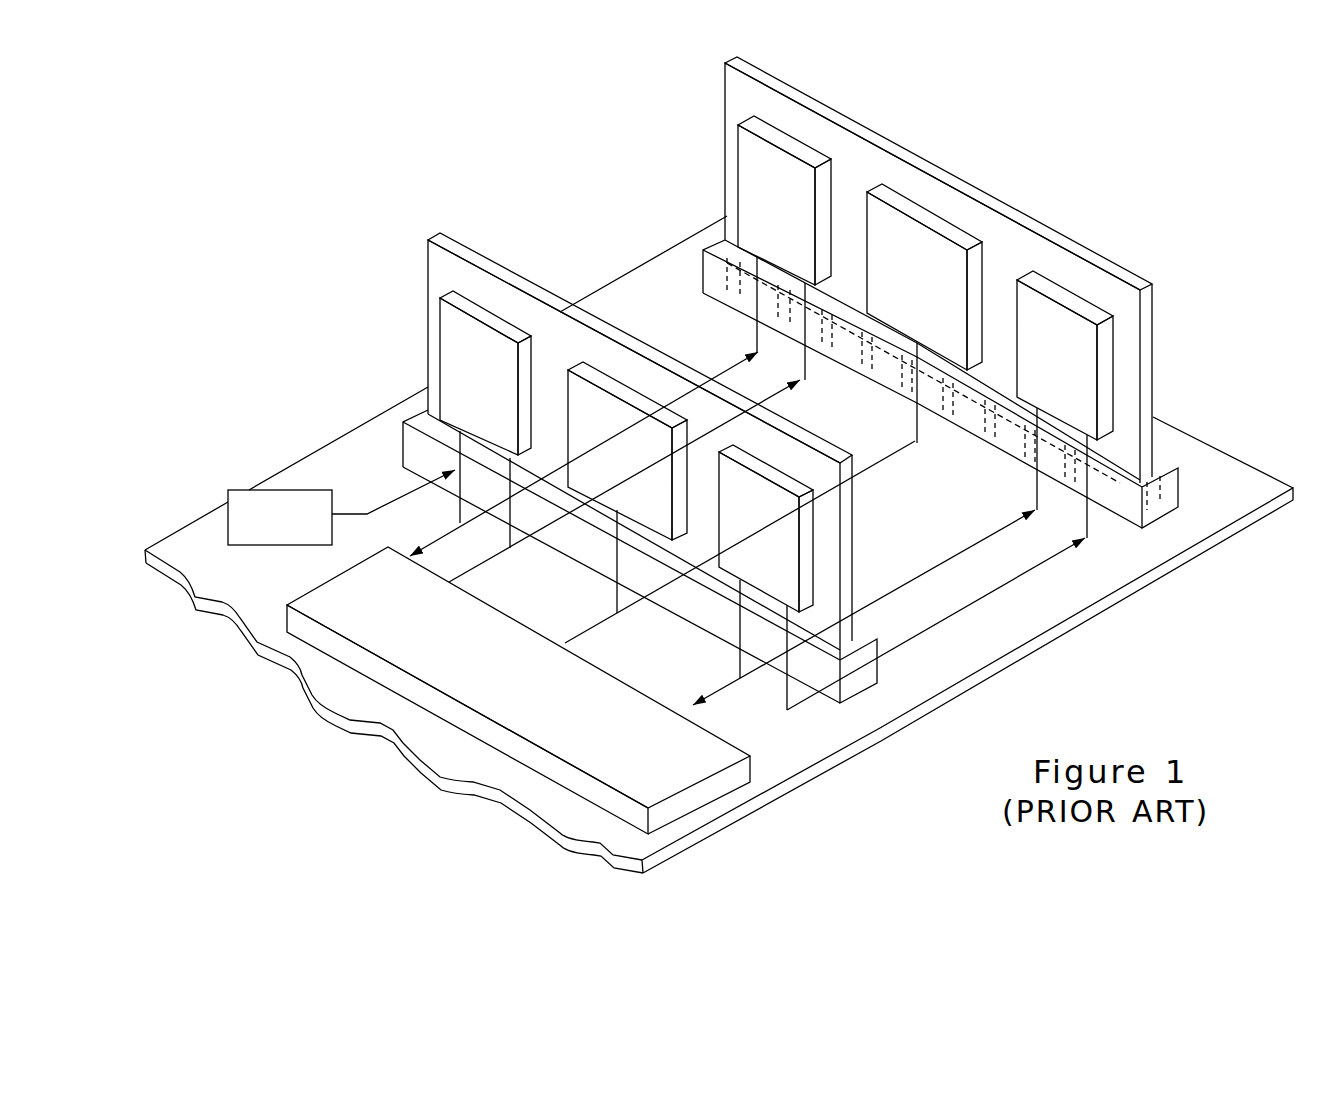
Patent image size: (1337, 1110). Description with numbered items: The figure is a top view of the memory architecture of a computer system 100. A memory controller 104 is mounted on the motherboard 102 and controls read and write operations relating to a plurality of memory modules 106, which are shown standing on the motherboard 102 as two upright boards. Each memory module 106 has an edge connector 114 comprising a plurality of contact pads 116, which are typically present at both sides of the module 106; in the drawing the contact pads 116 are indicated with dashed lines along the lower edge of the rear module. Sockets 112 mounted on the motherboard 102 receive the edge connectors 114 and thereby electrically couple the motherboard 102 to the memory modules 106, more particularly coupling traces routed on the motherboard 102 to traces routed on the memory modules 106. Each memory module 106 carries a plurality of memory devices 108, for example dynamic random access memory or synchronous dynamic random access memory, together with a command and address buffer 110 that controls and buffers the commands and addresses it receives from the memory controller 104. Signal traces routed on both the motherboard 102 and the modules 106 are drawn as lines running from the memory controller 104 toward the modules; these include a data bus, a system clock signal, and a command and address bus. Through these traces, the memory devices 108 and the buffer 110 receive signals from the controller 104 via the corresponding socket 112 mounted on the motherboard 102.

The computer system 100 is at (316, 266).
The motherboard 102 is at (1125, 600).
The memory controller 104 is at (702, 792).
The memory module 106 is at (853, 515).
The memory device 108 is at (496, 313).
The C/A buffer 110 is at (637, 392).
The socket 112 is at (405, 415).
The edge connector 114 is at (1145, 497).
The contact pad 116 is at (1000, 447).